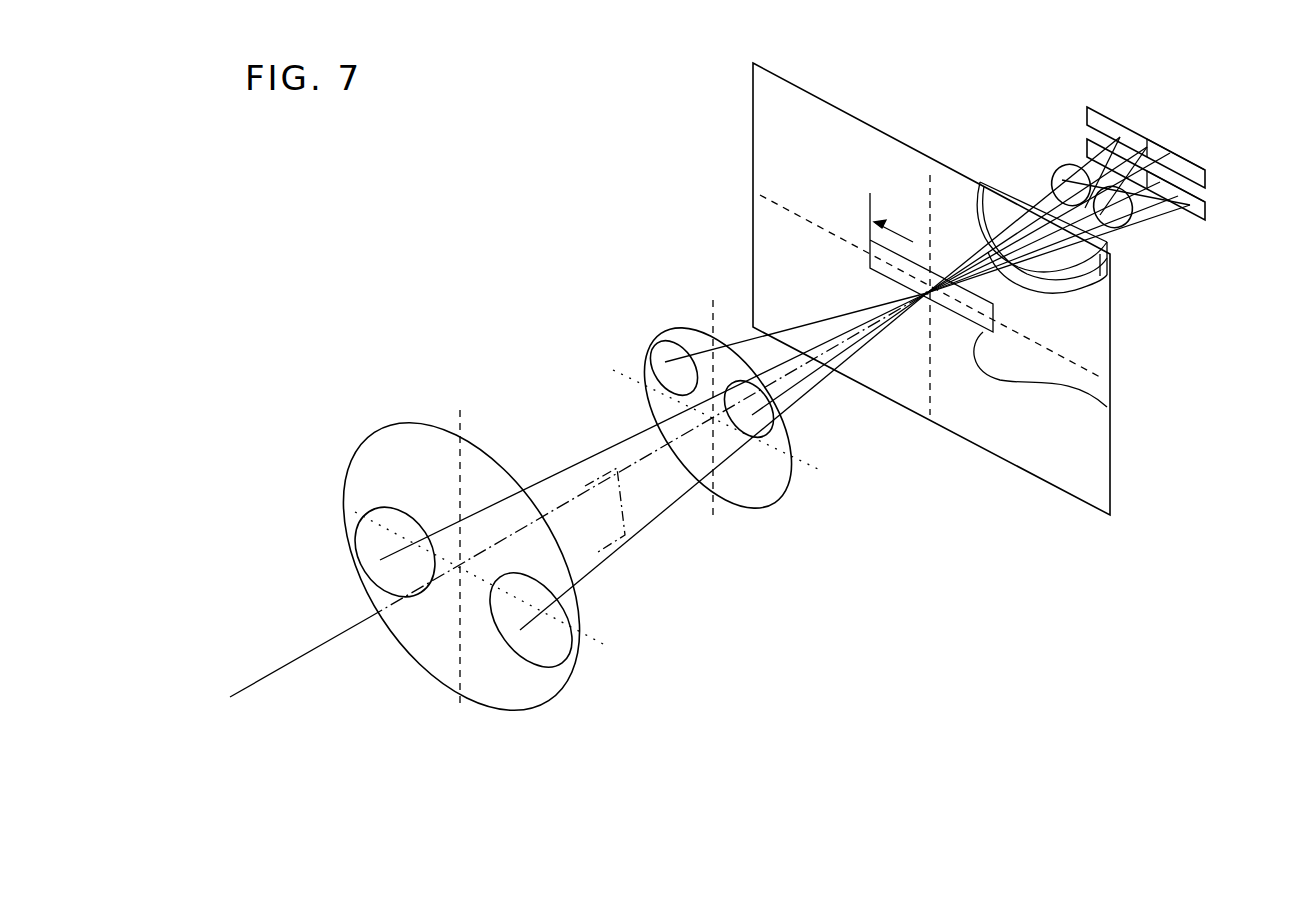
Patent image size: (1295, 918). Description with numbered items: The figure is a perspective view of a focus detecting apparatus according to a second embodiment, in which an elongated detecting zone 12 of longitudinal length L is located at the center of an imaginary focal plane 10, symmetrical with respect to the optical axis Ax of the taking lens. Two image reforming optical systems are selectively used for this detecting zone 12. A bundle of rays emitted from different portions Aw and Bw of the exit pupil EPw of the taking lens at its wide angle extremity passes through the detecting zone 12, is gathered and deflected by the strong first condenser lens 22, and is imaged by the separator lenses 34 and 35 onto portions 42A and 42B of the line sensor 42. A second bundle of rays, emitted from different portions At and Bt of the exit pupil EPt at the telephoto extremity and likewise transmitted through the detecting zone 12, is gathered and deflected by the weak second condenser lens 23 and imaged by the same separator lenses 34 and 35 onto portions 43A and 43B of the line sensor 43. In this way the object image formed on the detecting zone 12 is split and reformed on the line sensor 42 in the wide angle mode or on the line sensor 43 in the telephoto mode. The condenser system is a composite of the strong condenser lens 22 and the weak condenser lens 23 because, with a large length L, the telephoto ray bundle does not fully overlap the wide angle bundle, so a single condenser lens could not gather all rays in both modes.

The imaginary focal plane 10 is at (768, 128).
The detecting zone 12 is at (1112, 418).
The first condenser lens 22 is at (1110, 284).
The second condenser lens 23 is at (1012, 186).
The separator lens 34 is at (1125, 223).
The separator lens 35 is at (1055, 175).
The line sensor 42 is at (1173, 134).
The portion of line sensor 42A is at (1173, 153).
The portion of line sensor 42B is at (1106, 120).
The line sensor 43 is at (1161, 168).
The portion of line sensor 43A is at (1198, 213).
The portion of line sensor 43B is at (1087, 138).
The longitudinal length of the detecting zone L is at (938, 265).
The optical axis Ax is at (578, 495).
The portion of exit pupil at wide angle extremity Aw is at (662, 353).
The portion of exit pupil at wide angle extremity Bw is at (772, 421).
The exit pupil at wide angle extremity EPw is at (762, 490).
The portion of exit pupil at telephoto extremity At is at (355, 560).
The portion of exit pupil at telephoto extremity Bt is at (580, 613).
The exit pupil at telephoto extremity EPt is at (560, 690).